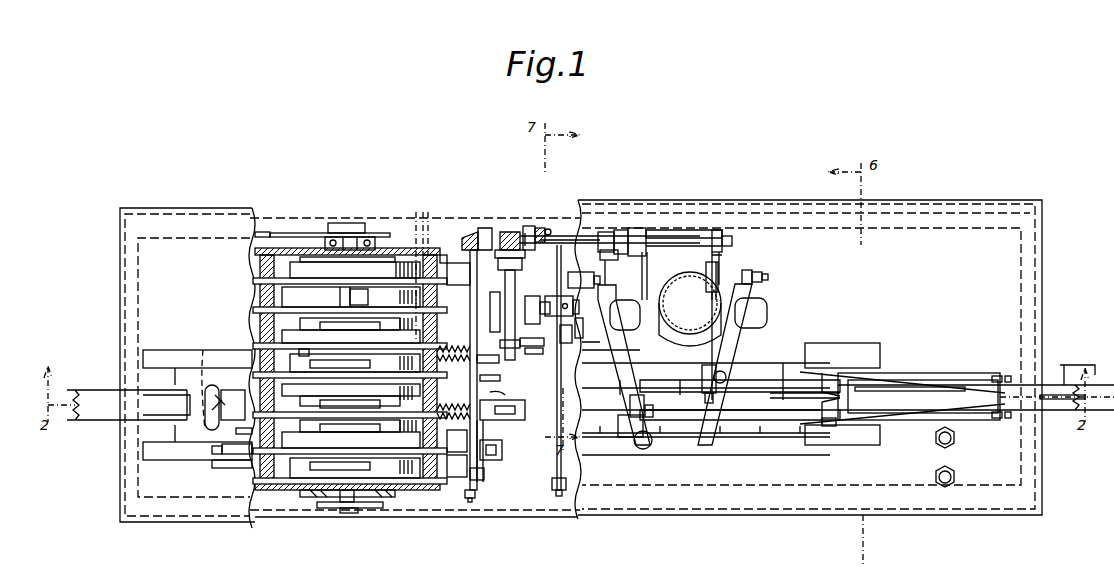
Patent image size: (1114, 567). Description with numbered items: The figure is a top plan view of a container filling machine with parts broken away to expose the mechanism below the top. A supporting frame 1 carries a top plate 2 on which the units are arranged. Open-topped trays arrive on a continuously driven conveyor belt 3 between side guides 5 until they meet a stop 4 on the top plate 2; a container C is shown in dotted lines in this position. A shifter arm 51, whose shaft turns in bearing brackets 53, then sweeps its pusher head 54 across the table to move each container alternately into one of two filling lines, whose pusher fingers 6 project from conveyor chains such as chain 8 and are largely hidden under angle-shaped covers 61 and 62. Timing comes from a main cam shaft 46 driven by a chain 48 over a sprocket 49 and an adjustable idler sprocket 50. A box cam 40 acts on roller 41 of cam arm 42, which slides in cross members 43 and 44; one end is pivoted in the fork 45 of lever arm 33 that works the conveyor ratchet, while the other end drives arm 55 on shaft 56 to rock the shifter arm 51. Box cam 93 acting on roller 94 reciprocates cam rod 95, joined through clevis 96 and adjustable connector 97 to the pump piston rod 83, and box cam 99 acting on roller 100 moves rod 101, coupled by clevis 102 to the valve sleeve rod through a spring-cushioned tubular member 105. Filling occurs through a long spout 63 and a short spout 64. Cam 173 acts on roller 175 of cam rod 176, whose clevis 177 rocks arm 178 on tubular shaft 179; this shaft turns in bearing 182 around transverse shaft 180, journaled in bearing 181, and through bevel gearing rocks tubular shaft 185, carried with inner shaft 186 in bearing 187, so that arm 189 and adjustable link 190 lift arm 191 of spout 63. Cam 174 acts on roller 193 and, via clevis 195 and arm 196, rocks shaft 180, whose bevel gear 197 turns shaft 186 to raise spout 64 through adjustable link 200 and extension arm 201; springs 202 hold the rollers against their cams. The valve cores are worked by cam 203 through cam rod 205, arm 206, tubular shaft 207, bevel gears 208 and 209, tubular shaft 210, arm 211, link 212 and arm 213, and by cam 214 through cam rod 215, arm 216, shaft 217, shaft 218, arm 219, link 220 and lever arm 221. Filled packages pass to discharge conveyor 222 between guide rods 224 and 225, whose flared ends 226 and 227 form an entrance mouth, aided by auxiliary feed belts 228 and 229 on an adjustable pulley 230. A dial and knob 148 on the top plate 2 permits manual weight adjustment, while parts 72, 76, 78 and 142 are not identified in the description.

The supporting frame 1 is at (245, 522).
The top plate 2 is at (150, 284).
The conveyor belt 3 is at (90, 396).
The stop 4 is at (232, 392).
The side guides 5 is at (120, 392).
The pusher fingers 6 is at (197, 372).
The conveyor chain 8 is at (882, 350).
The container C is at (206, 400).
The lever arm 33 is at (503, 450).
The rotary box cam 40 is at (382, 436).
The roller 41 is at (412, 434).
The cam arm 42 is at (456, 434).
The cross member 43 is at (262, 296).
The cross member 44 is at (456, 466).
The fork 45 is at (496, 448).
The main cam shaft 46 is at (338, 296).
The driving chain 48 is at (262, 232).
The sprocket 49 is at (380, 232).
The idler sprocket 50 is at (285, 233).
The shifter arm 51 is at (212, 386).
The bearing brackets 53 is at (243, 436).
The pusher head 54 is at (215, 410).
The arm 55 is at (215, 466).
The shaft 56 is at (218, 450).
The angle-shaped cover 61 is at (748, 446).
The angle-shaped cover 62 is at (806, 378).
The long filling spout 63 is at (610, 378).
The short filling spout 64 is at (772, 375).
The cylinder 72 is at (685, 282).
The bracket 76 is at (565, 343).
The bracket 78 is at (576, 332).
The piston rod 83 is at (575, 300).
The box cam 93 is at (262, 330).
The roller 94 is at (404, 297).
The cam actuated rod 95 is at (448, 310).
The clevis 96 is at (558, 318).
The adjustable connector 97 is at (470, 323).
The box cam 99 is at (388, 260).
The roller 100 is at (425, 209).
The rod 101 is at (364, 297).
The clevis arrangement 102 is at (580, 273).
The tubular member 105 is at (535, 226).
The block 142 is at (535, 324).
The dial and knob 148 is at (955, 475).
The cam 173 is at (388, 328).
The cam 174 is at (388, 392).
The roller 175 is at (294, 360).
The cam rod 176 is at (318, 332).
The clevis 177 is at (522, 348).
The arm 178 is at (536, 362).
The tubular shaft 179 is at (505, 326).
The transverse shaft 180 is at (518, 425).
The bearing 181 is at (515, 490).
The bearing 182 is at (500, 238).
The tubular shaft 185 is at (593, 236).
The shaft 186 is at (680, 230).
The bearing 187 is at (550, 235).
The arm 189 is at (610, 260).
The adjustable link 190 is at (312, 418).
The arm 191 is at (608, 300).
The roller 193 is at (322, 404).
The clevis 195 is at (508, 398).
The arm 196 is at (525, 408).
The bevel gear 197 is at (510, 252).
The adjustable link 200 is at (760, 278).
The extension arm 201 is at (760, 298).
The springs 202 is at (490, 366).
The cam 203 is at (336, 362).
The cam rod 205 is at (388, 358).
The arm 206 is at (478, 360).
The tubular shaft 207 is at (451, 265).
The bevel gear 208 is at (468, 253).
The bevel gear 209 is at (478, 238).
The tubular shaft 210 is at (622, 230).
The arm 211 is at (640, 230).
The link 212 is at (646, 274).
The arm 213 is at (654, 408).
The cam 214 is at (314, 472).
The cam rod 215 is at (458, 490).
The arm 216 is at (480, 494).
The shaft 217 is at (480, 470).
The shaft 218 is at (718, 230).
The arm 219 is at (718, 262).
The link 220 is at (714, 286).
The lever arm 221 is at (712, 393).
The discharge conveyor 222 is at (970, 383).
The guide rod 224 is at (1060, 368).
The guide rod 225 is at (1060, 412).
The flared portion 226 is at (860, 373).
The flared portion 227 is at (865, 445).
The auxiliary feed belt 228 is at (950, 387).
The auxiliary feed belt 229 is at (962, 430).
The pulley 230 is at (998, 376).